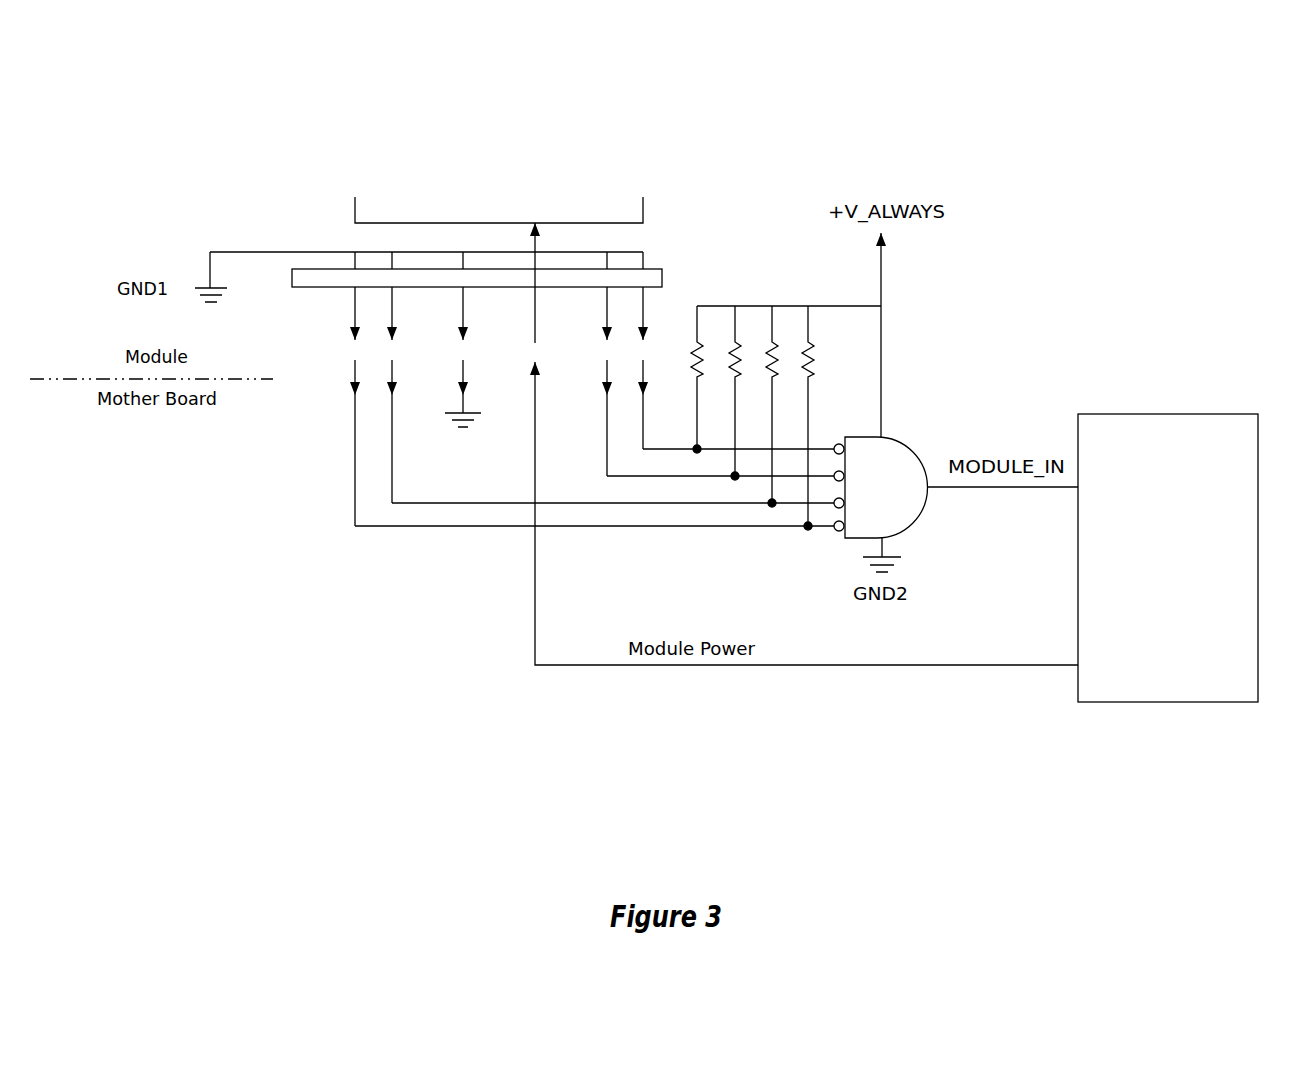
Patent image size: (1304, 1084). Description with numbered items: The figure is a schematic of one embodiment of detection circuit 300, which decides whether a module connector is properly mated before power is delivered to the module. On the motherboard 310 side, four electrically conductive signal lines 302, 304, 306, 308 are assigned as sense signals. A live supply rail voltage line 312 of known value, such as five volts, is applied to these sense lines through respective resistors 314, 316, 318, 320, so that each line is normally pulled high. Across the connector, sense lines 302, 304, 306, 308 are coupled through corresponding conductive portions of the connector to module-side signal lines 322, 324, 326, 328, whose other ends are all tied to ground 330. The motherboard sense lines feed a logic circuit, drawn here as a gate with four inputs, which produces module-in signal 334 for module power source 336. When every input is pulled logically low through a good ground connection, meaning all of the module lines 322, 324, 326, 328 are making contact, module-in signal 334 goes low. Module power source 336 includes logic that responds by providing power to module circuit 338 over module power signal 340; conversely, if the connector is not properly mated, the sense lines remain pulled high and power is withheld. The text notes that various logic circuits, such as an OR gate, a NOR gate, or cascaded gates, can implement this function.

The detection circuit 300 is at (947, 126).
The signal line 302 is at (375, 527).
The signal line 304 is at (392, 488).
The signal line 306 is at (607, 465).
The signal line 308 is at (685, 476).
The motherboard 310 is at (232, 380).
The live supply rail voltage line 312 is at (881, 335).
The resistor 314 is at (808, 342).
The resistor 316 is at (772, 342).
The resistor 318 is at (736, 342).
The resistor 320 is at (698, 342).
The signal line 322 is at (355, 292).
The signal line 324 is at (392, 298).
The signal line 326 is at (607, 303).
The signal line 328 is at (647, 307).
The ground 330 is at (210, 265).
The module-in signal 334 is at (903, 440).
The module power source 336 is at (1185, 414).
The module circuit 338 is at (499, 209).
The module power signal 340 is at (935, 667).